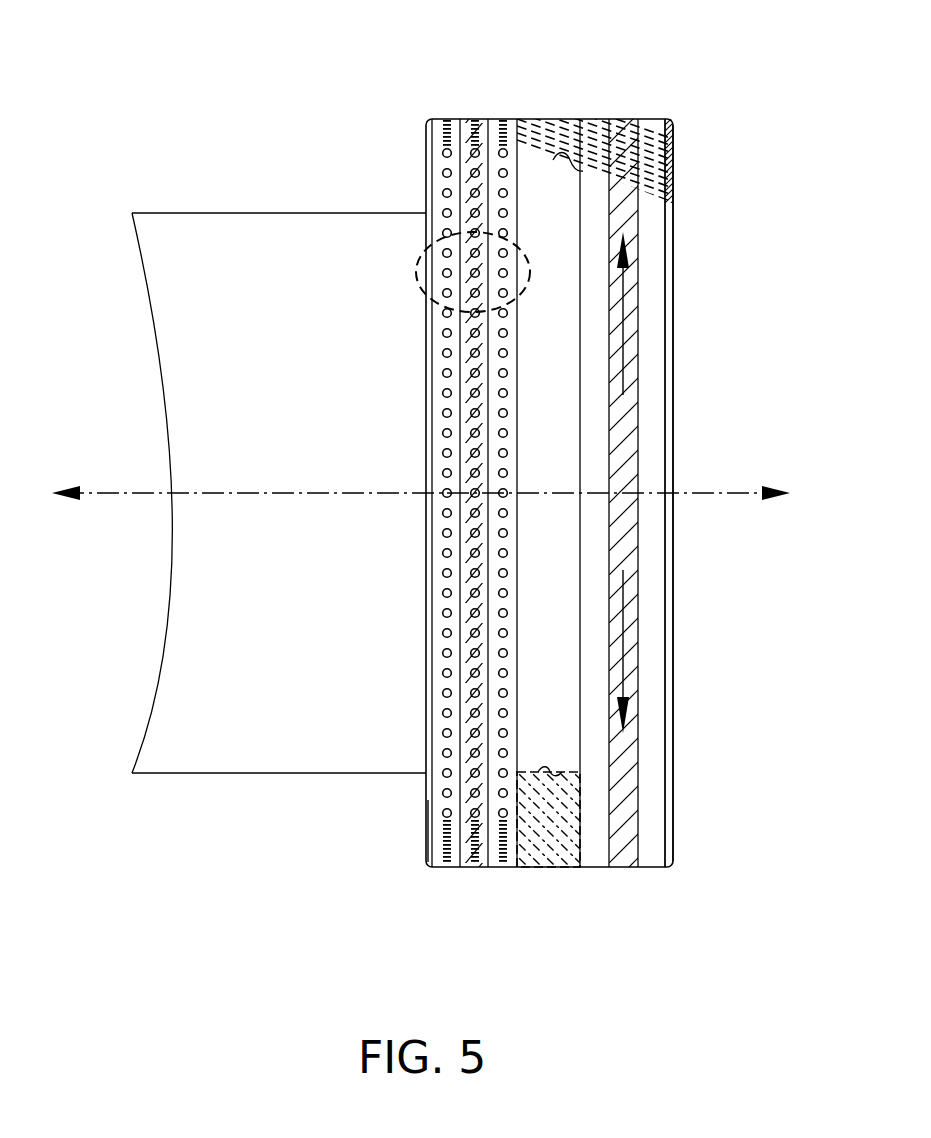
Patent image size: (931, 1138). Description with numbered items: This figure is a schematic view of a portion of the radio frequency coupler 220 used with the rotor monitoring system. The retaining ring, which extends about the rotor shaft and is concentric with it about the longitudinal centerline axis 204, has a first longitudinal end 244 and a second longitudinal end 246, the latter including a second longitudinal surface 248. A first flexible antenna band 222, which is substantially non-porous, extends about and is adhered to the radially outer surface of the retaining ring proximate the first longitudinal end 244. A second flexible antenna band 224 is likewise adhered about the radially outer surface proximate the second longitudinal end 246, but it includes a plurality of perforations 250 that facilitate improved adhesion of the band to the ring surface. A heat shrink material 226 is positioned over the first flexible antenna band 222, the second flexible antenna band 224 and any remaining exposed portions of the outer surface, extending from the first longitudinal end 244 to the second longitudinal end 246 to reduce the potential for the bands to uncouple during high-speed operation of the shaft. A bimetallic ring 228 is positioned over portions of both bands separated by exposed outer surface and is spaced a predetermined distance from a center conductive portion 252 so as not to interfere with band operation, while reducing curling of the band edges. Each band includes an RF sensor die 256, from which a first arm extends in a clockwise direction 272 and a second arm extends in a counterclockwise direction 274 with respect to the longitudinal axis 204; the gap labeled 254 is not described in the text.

The longitudinal centerline axis 204 is at (694, 492).
The radio frequency (RF) coupler 220 is at (594, 106).
The first flexible antenna band 222 is at (655, 253).
The second flexible antenna band 224 is at (458, 853).
The heat shrink material 226 is at (655, 139).
The bimetallic ring 228 is at (539, 873).
The first longitudinal end 244 is at (680, 189).
The second longitudinal end 246 is at (410, 200).
The second longitudinal surface 248 is at (426, 593).
The perforations 250 is at (420, 286).
The center conductive portion 252 is at (625, 860).
The gap 254 is at (593, 773).
The RF sensor die 256 is at (430, 833).
The clockwise direction 272 is at (625, 345).
The counterclockwise direction 274 is at (625, 617).